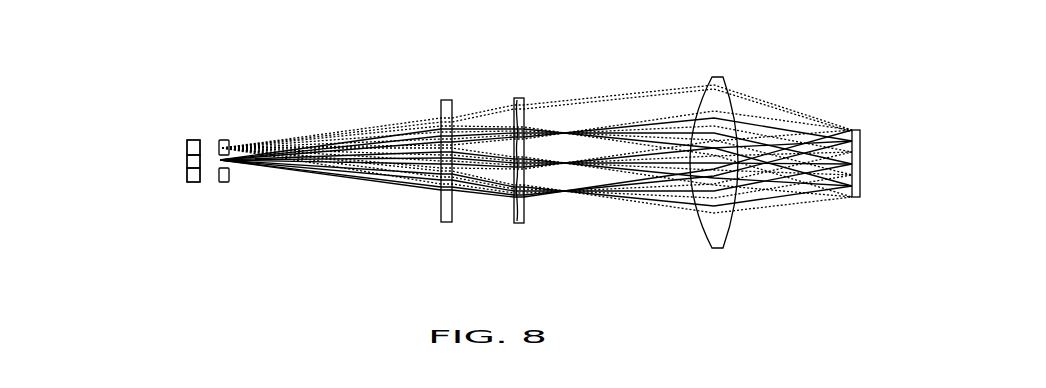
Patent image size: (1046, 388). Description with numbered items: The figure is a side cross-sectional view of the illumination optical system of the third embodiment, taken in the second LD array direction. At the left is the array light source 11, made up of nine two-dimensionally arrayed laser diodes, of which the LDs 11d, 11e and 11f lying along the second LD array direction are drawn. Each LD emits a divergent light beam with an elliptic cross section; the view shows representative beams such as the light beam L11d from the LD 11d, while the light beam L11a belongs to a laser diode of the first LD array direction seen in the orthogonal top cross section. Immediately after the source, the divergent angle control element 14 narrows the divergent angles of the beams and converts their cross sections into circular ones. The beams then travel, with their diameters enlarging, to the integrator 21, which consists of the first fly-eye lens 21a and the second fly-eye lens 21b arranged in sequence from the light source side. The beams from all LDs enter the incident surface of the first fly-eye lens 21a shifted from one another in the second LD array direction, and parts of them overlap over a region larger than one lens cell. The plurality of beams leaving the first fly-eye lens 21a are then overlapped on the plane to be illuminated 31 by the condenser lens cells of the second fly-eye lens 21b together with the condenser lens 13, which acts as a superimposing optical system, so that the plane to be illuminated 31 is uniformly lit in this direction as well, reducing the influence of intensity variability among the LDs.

The array light source 11 is at (115, 133).
The LD 11d is at (188, 148).
The LD 11e is at (188, 162).
The LD 11f is at (188, 174).
The divergent angle control element 14 is at (223, 134).
The light beam L11d is at (296, 140).
The light beam L11a is at (317, 170).
The integrator 21 is at (487, 124).
The first fly-eye lens 21a is at (452, 149).
The second fly-eye lens 21b is at (520, 149).
The condenser lens 13 is at (725, 88).
The plane to be illuminated 31 is at (862, 135).